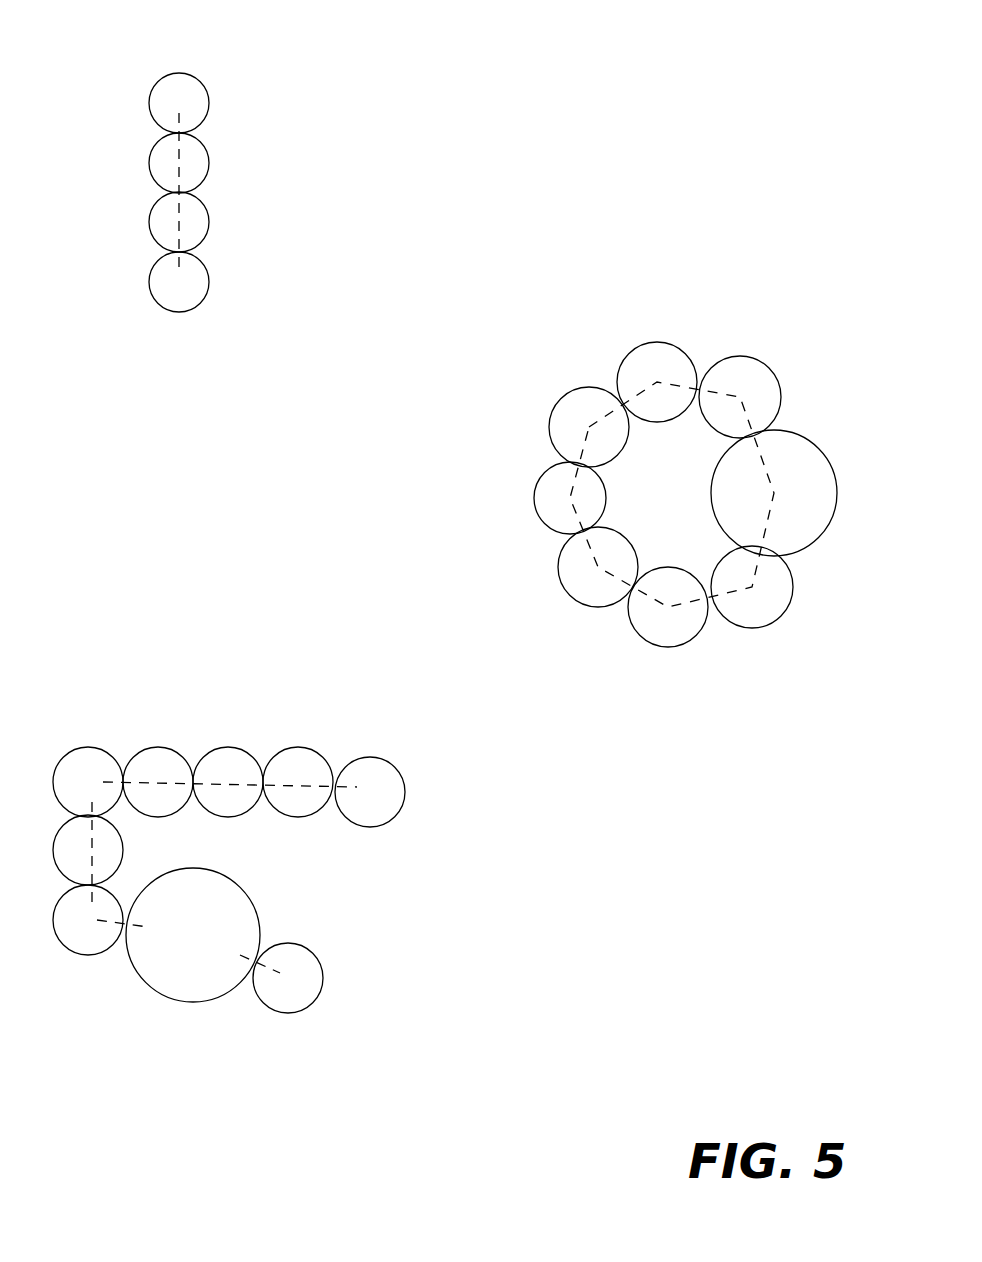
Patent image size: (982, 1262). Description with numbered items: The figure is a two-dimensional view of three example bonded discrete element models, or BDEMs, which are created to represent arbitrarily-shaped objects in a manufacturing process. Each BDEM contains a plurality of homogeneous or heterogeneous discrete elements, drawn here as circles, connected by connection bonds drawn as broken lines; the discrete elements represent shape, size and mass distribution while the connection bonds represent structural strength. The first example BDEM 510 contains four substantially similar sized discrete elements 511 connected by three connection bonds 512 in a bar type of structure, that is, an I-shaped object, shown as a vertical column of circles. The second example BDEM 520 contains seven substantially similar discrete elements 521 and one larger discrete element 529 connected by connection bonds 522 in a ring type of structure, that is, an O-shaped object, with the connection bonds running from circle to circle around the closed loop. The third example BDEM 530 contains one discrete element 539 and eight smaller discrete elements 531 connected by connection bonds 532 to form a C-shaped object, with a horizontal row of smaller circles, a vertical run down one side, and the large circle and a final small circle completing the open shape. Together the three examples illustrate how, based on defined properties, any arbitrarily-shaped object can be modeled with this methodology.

The first example bonded discrete element model 510 is at (156, 66).
The discrete elements 511 is at (199, 306).
The connection bonds 512 is at (176, 267).
The second example bonded discrete element model 520 is at (662, 308).
The discrete elements 521 is at (769, 399).
The connection bonds 522 is at (652, 602).
The larger discrete element 529 is at (819, 504).
The third example bonded discrete element model 530 is at (204, 711).
The smaller discrete elements 531 is at (393, 816).
The connection bonds 532 is at (143, 935).
The discrete element 539 is at (218, 917).